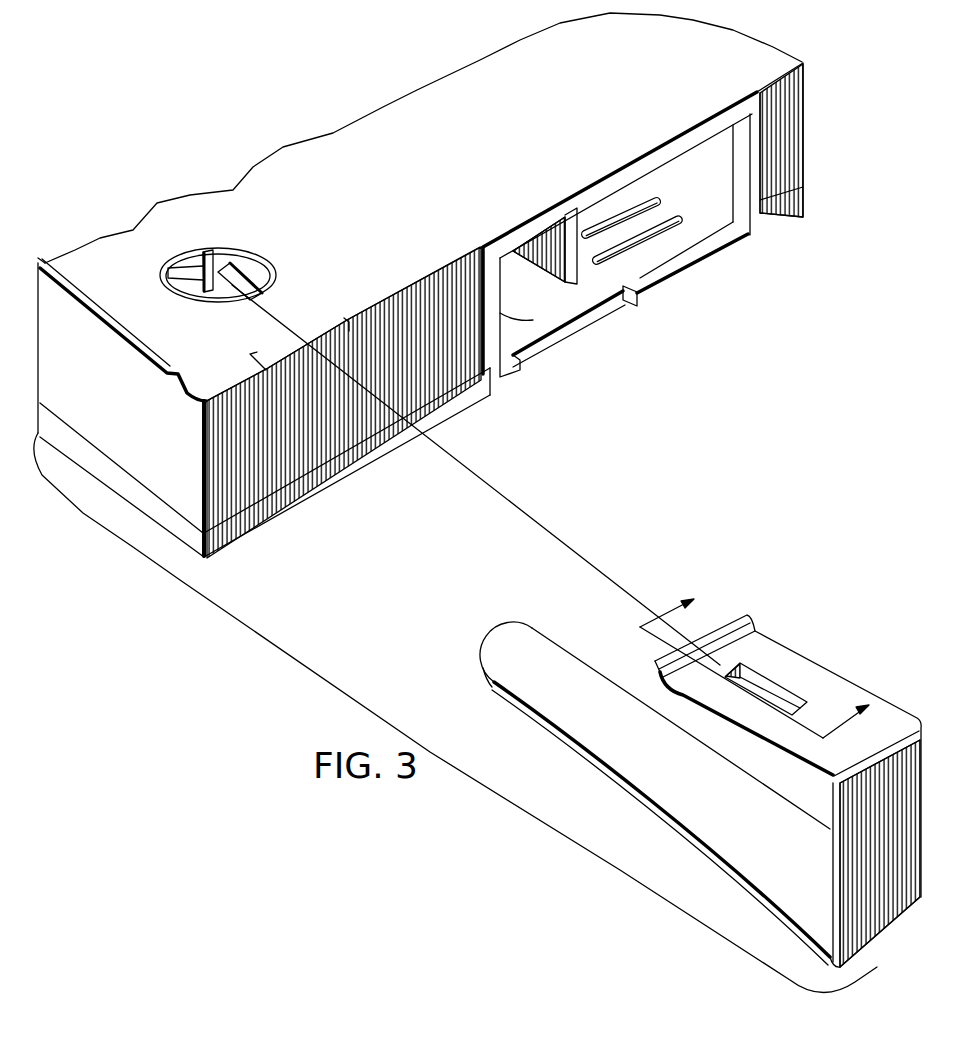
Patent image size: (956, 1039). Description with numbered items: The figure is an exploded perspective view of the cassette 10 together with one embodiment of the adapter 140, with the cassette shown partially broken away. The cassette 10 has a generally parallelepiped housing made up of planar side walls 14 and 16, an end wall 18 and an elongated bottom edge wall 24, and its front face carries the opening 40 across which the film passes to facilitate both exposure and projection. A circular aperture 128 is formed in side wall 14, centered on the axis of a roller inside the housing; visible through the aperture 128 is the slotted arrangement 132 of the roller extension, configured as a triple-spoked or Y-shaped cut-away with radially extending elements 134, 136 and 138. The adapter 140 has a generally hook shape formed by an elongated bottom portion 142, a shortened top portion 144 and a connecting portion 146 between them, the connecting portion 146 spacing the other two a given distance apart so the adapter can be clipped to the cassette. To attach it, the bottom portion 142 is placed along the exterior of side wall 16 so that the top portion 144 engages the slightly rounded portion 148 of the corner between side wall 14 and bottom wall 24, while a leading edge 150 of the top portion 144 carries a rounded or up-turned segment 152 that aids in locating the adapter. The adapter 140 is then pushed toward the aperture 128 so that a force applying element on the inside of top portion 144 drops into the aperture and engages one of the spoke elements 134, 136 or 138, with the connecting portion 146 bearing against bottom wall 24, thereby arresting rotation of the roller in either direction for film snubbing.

The cassette 10 is at (424, 125).
The side wall 14 is at (756, 66).
The side wall 16 is at (553, 318).
The end wall 18 is at (153, 457).
The bottom edge wall 24 is at (253, 487).
The opening 40 is at (655, 230).
The aperture 128 is at (228, 250).
The slotted arrangement 132 is at (236, 242).
The radially extending element 134 is at (187, 280).
The radially extending element 136 is at (236, 264).
The radially extending element 138 is at (245, 298).
The adapter 140 is at (700, 751).
The bottom portion 142 is at (640, 760).
The top portion 144 is at (805, 668).
The connecting portion 146 is at (867, 850).
The rounded portion 148 is at (333, 333).
The leading edge 150 is at (725, 608).
The up-turned segment 152 is at (652, 666).